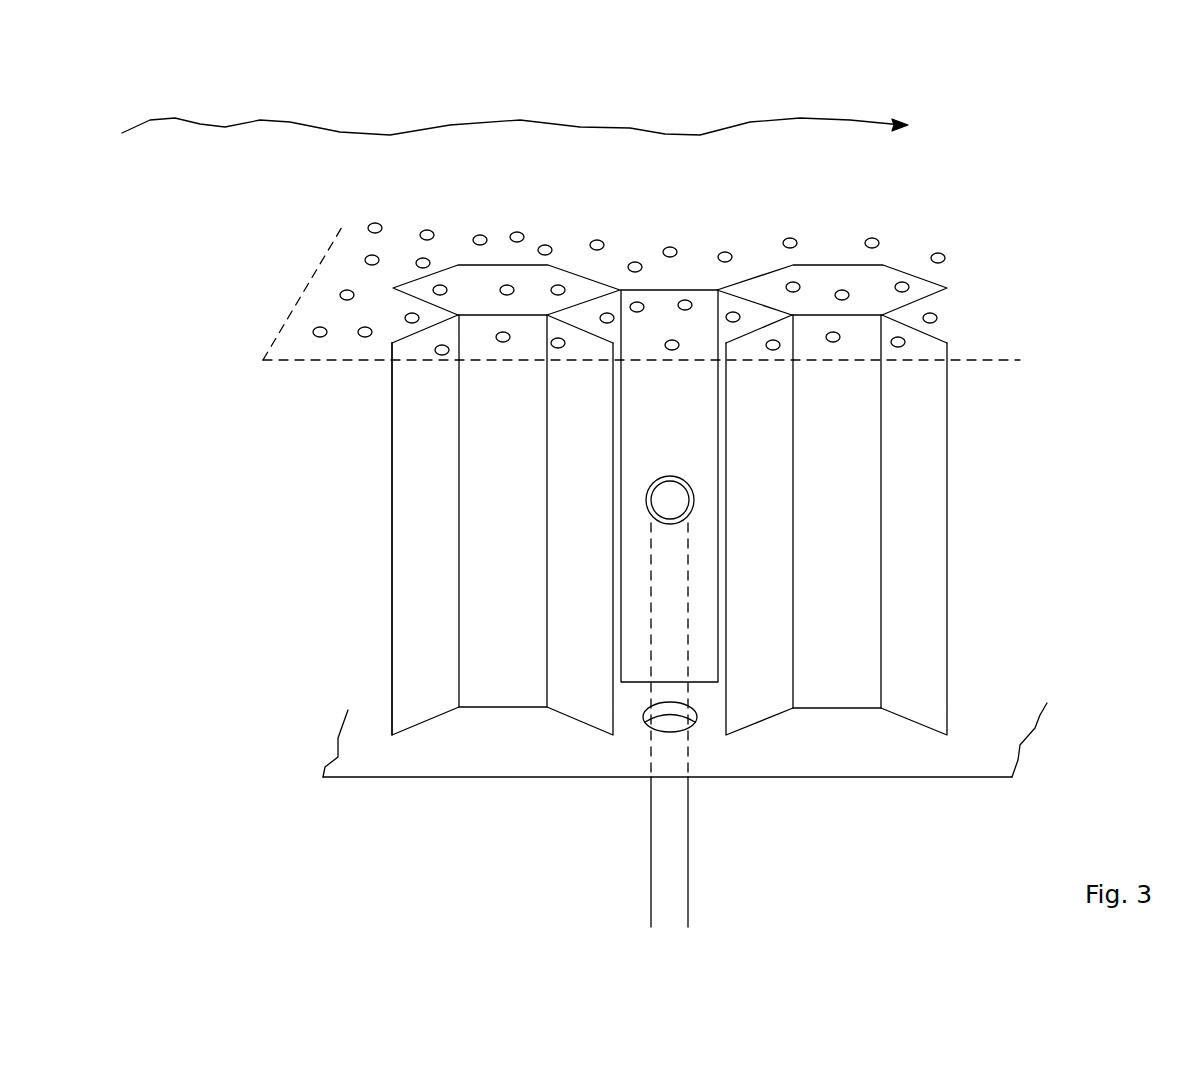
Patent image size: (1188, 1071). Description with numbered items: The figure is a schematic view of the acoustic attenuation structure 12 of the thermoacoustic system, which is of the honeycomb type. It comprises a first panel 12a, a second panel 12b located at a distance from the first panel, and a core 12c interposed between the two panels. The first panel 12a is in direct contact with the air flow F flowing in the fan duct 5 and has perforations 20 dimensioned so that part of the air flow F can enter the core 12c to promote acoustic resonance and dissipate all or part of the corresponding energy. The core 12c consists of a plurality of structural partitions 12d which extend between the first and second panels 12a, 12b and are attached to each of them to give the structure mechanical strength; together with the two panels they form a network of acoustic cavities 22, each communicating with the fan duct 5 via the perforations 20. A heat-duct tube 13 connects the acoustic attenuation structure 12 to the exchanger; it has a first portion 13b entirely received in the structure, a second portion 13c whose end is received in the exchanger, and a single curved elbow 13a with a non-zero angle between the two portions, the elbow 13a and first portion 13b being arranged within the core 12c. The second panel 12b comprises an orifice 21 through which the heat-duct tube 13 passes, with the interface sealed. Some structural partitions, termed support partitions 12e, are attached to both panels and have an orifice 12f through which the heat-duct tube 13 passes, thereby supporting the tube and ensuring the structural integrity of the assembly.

The fan duct 5 is at (1020, 69).
The air flow F is at (630, 128).
The acoustic attenuation structure 12 is at (1002, 237).
The first panel 12a is at (342, 255).
The second panel 12b is at (365, 760).
The core 12c is at (366, 565).
The structural partitions 12d is at (413, 442).
The support partitions 12e is at (660, 395).
The orifice 12f is at (687, 478).
The heat-duct tube 13 is at (774, 730).
The elbow 13a is at (677, 625).
The first portion 13b is at (675, 503).
The second portion 13c is at (690, 862).
The perforations 20 is at (375, 222).
The orifice 21 is at (645, 720).
The acoustic cavities 22 is at (483, 288).